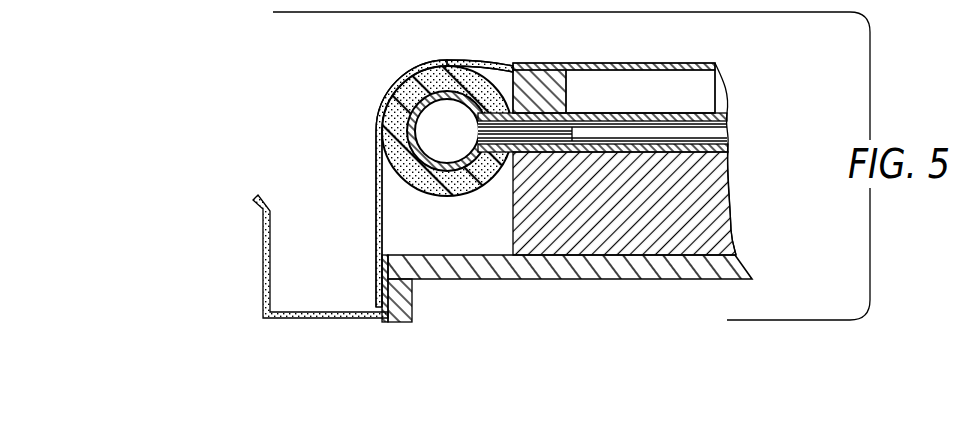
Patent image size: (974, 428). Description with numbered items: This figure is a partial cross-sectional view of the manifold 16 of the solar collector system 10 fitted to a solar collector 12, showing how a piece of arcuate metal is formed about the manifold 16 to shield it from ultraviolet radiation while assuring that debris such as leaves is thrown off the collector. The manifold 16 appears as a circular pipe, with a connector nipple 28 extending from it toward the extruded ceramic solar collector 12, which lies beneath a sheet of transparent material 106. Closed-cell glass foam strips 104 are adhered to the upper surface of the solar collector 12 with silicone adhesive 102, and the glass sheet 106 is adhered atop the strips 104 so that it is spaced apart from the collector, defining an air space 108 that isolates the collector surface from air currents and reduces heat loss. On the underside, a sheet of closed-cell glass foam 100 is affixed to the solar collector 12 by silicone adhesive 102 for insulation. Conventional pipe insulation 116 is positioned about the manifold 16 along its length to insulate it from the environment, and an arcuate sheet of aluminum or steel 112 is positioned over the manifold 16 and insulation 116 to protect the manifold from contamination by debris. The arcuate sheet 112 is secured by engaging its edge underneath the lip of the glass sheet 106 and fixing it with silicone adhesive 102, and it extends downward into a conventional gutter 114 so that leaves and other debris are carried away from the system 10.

The solar collector system 10 is at (723, 44).
The solar collector 12 is at (726, 107).
The manifold 16 is at (480, 71).
The connector nipple 28 is at (603, 115).
The sheet of closed-cell glass foam 100 is at (730, 180).
The silicone adhesive 102 is at (545, 64).
The closed-cell glass foam strip 104 is at (567, 91).
The sheet of transparent material 106 is at (651, 63).
The air space 108 is at (710, 96).
The arcuate sheet 112 is at (431, 63).
The gutter 114 is at (262, 240).
The pipe insulation 116 is at (389, 96).